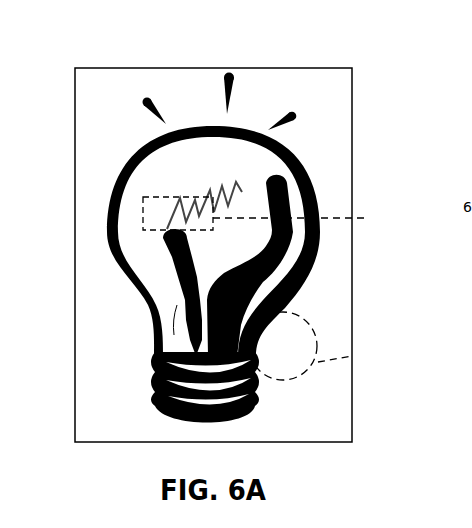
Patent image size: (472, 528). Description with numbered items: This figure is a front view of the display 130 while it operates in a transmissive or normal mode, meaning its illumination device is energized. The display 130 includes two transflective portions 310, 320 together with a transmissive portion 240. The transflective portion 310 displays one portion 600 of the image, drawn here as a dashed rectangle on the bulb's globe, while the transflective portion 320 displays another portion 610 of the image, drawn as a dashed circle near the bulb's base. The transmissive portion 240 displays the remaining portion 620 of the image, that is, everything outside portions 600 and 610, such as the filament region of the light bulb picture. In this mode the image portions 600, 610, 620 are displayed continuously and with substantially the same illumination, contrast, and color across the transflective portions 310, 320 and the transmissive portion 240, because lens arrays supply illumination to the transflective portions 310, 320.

The display 130 is at (90, 40).
The transmissive portion 240 is at (323, 137).
The remaining portion of the image 620 is at (173, 173).
The portion of the image 600 is at (170, 221).
The transflective portion 310 is at (309, 218).
The portion of the image 610 is at (296, 334).
The transflective portion 320 is at (352, 356).